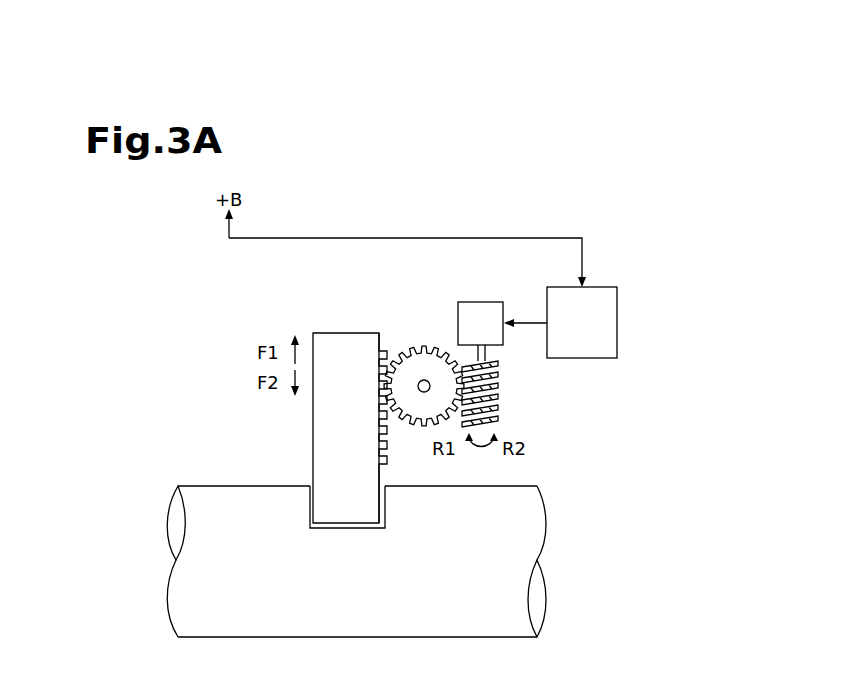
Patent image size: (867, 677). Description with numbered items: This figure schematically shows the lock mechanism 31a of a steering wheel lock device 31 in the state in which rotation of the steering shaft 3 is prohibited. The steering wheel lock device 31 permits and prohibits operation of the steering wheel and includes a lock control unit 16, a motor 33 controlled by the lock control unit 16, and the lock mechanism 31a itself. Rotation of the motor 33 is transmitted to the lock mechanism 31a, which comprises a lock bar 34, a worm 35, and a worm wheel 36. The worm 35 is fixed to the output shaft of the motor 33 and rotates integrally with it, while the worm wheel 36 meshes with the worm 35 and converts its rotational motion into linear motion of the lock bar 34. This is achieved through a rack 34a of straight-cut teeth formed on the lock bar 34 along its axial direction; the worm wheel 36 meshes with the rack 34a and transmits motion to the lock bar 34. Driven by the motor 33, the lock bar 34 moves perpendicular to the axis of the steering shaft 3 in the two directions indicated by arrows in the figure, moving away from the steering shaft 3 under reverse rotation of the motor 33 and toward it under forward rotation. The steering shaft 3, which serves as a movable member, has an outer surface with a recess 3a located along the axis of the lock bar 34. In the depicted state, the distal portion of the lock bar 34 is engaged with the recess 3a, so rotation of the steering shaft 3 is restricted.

The steering shaft 3 is at (372, 561).
The recess 3a is at (350, 523).
The lock control unit 16 is at (617, 311).
The steering wheel lock device 31 is at (680, 204).
The lock mechanism 31a is at (180, 334).
The motor 33 is at (481, 302).
The lock bar 34 is at (354, 413).
The rack 34a is at (443, 338).
The worm 35 is at (499, 375).
The worm wheel 36 is at (410, 416).